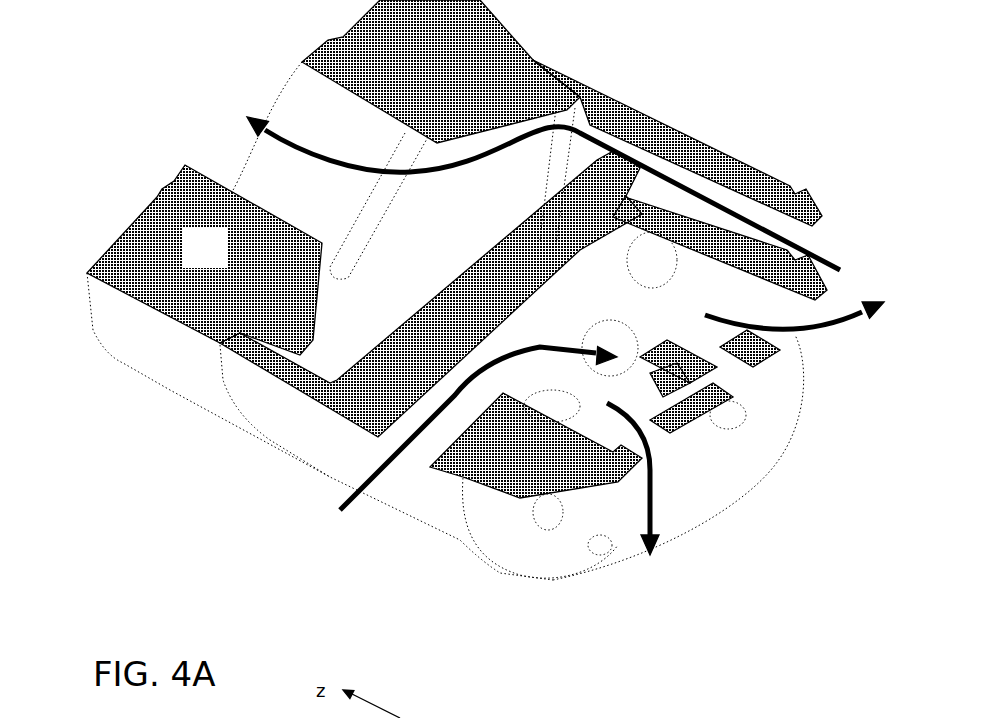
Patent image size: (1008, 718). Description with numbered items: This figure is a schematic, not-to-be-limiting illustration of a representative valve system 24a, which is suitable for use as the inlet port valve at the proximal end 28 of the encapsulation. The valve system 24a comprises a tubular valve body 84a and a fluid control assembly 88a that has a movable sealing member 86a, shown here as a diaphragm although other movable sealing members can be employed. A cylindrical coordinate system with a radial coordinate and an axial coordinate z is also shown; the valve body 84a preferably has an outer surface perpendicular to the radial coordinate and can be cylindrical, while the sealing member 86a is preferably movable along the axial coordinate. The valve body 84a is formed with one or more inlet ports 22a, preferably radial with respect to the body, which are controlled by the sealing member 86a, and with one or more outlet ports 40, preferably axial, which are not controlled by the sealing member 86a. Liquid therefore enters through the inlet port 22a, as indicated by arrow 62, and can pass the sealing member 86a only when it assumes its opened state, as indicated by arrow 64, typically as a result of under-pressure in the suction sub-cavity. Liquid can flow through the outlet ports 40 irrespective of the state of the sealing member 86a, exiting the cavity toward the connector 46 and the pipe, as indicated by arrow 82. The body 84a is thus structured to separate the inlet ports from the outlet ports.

The inlet port 22a is at (650, 257).
The valve system 24a is at (220, 520).
The proximal end 28 is at (62, 388).
The outlet port 40 is at (807, 235).
The connector 46 is at (217, 262).
The arrow indicating liquid entry through inlet port 62 is at (360, 470).
The arrow indicating flow through the valve 64 is at (832, 305).
The arrow indicating flow toward outlet port 82 is at (592, 133).
The tubular valve body 84a is at (450, 537).
The movable sealing member 86a is at (780, 350).
The fluid control assembly 88a is at (792, 508).